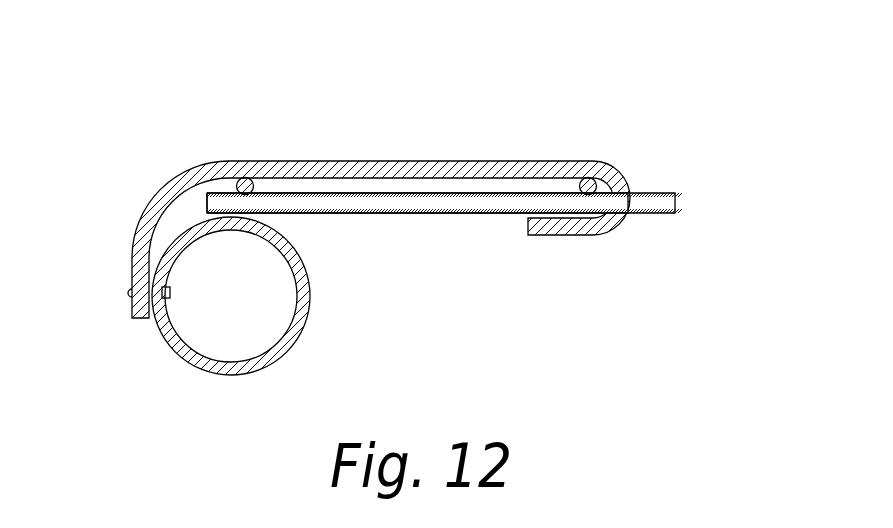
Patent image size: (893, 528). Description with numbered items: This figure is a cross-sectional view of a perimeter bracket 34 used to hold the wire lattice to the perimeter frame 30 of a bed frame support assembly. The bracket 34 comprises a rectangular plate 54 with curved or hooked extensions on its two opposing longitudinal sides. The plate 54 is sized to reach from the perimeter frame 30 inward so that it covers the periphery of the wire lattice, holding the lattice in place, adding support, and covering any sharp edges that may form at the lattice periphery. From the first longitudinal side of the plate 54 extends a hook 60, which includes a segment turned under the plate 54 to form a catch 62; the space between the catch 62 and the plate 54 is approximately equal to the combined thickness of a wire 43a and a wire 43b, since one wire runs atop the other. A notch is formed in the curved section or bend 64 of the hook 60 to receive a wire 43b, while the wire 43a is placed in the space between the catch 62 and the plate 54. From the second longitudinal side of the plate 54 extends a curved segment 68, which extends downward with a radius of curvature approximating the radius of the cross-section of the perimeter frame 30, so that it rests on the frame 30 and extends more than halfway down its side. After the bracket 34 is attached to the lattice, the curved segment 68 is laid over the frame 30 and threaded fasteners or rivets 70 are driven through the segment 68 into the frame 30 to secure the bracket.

The bracket 34 is at (200, 122).
The plate 54 is at (413, 161).
The curved segment 68 is at (143, 212).
The rivets 70 is at (124, 296).
The perimeter frame 30 is at (208, 374).
The wire 43a is at (562, 193).
The wire 43b is at (663, 193).
The bend 64 is at (630, 181).
The hook 60 is at (608, 236).
The catch 62 is at (571, 236).